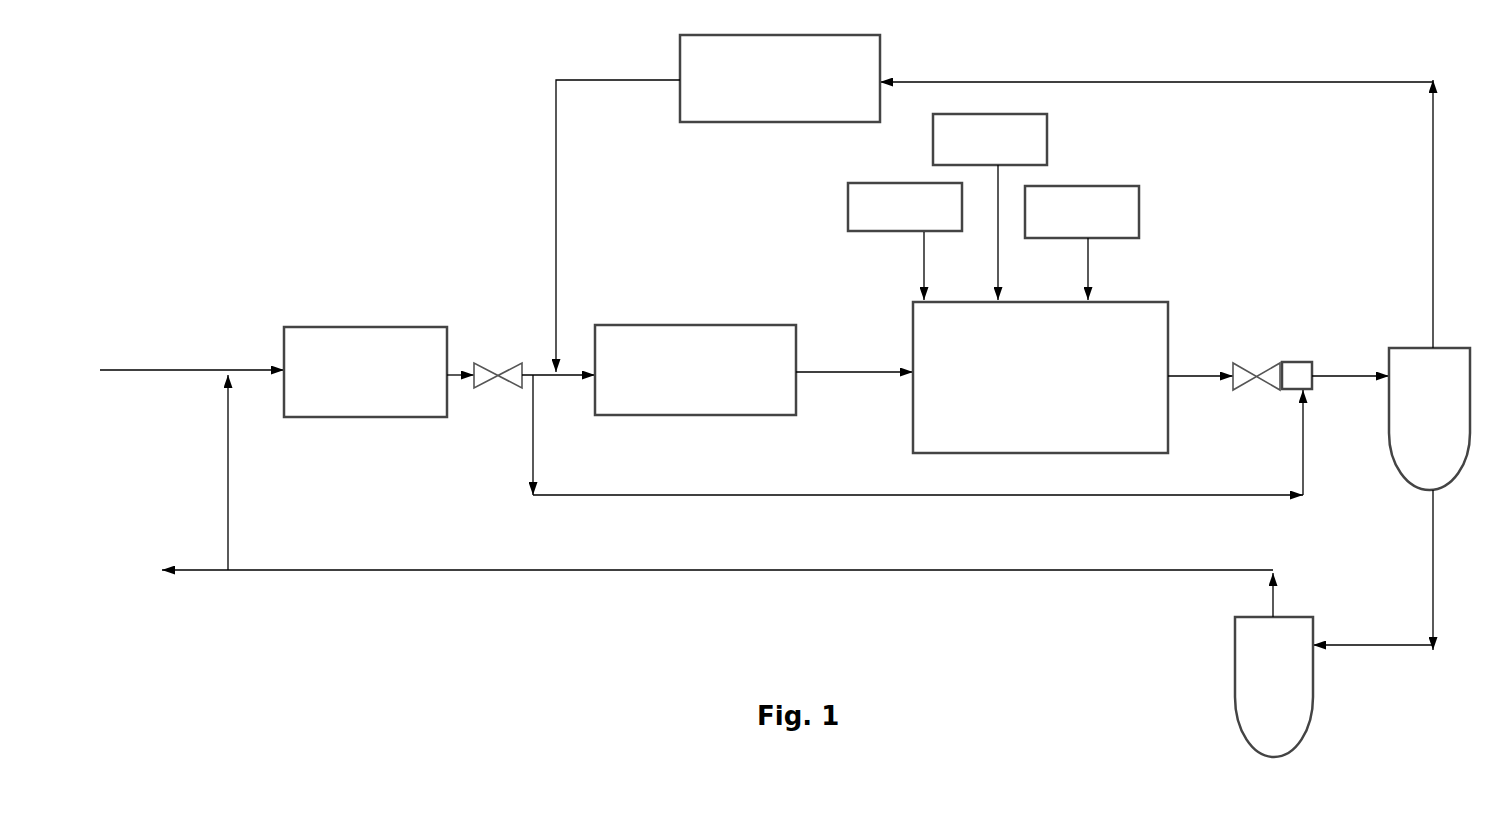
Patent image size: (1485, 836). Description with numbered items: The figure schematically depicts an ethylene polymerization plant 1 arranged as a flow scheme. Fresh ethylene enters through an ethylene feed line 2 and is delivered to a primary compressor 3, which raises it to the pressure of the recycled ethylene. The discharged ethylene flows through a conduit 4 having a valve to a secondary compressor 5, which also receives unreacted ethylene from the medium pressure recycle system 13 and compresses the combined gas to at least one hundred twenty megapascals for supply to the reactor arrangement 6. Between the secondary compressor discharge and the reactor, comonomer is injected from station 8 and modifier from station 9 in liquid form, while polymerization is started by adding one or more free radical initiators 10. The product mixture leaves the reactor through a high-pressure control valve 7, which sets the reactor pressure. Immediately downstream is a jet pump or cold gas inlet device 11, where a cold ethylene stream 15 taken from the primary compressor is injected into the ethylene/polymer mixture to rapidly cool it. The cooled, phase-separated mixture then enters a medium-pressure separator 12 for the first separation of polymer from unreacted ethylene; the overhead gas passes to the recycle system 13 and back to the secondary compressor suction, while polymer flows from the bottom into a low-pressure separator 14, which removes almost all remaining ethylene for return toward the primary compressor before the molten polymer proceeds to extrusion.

The polymerization plant 1 is at (368, 124).
The ethylene feed line 2 is at (192, 349).
The primary compressor 3 is at (365, 372).
The conduit 4 is at (484, 348).
The secondary compressor 5 is at (695, 370).
The reactor arrangement 6 is at (1040, 377).
The high-pressure control valve 7 is at (1224, 348).
The comonomer injection station 8 is at (905, 241).
The modifier injection station 9 is at (990, 207).
The free radical initiators 10 is at (1082, 243).
The cold gas inlet device 11 is at (1301, 348).
The medium-pressure separator 12 is at (1175, 365).
The medium pressure recycle system 13 is at (718, 203).
The low-pressure separator 14 is at (761, 566).
The stream 15 is at (918, 435).